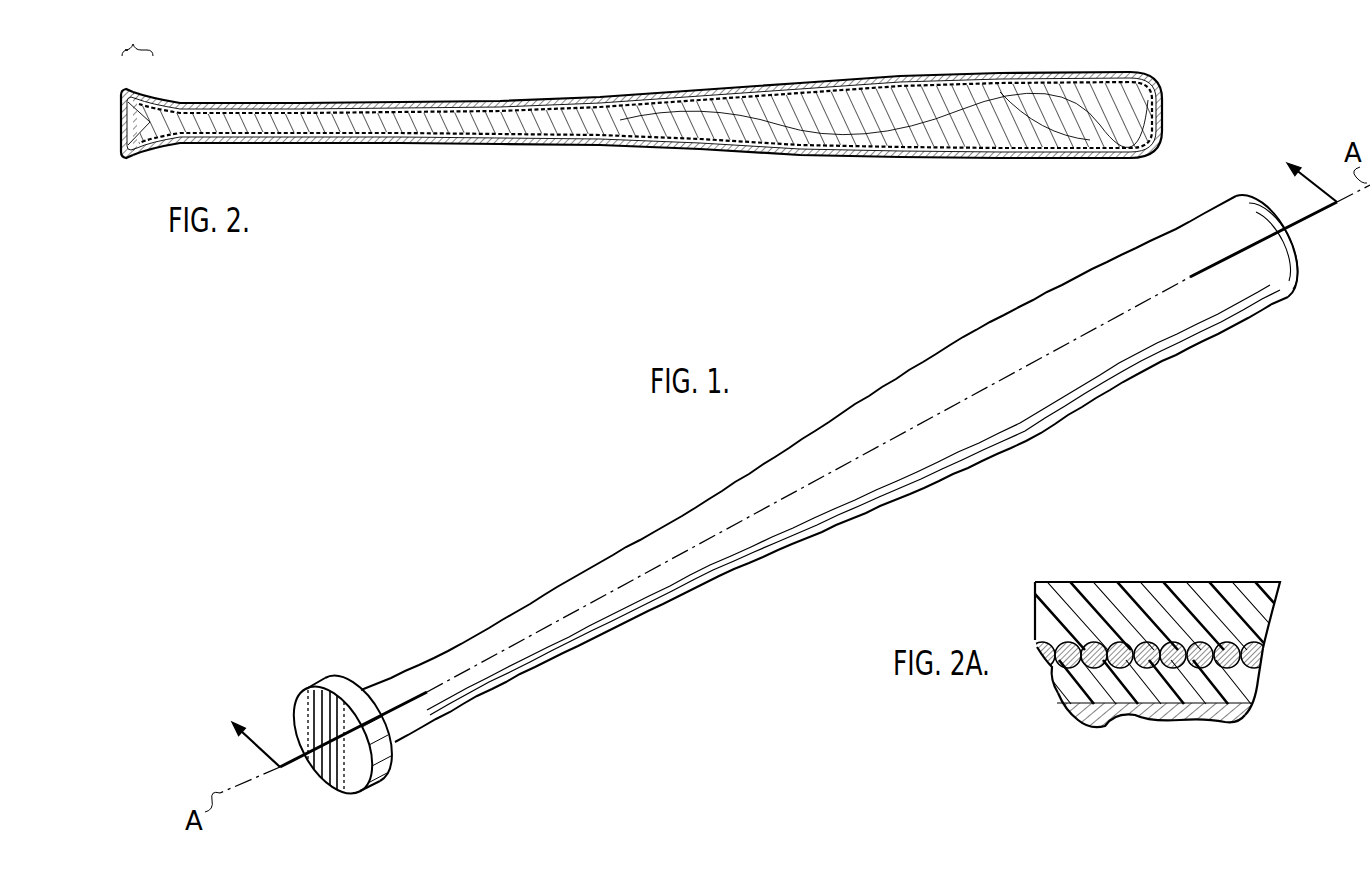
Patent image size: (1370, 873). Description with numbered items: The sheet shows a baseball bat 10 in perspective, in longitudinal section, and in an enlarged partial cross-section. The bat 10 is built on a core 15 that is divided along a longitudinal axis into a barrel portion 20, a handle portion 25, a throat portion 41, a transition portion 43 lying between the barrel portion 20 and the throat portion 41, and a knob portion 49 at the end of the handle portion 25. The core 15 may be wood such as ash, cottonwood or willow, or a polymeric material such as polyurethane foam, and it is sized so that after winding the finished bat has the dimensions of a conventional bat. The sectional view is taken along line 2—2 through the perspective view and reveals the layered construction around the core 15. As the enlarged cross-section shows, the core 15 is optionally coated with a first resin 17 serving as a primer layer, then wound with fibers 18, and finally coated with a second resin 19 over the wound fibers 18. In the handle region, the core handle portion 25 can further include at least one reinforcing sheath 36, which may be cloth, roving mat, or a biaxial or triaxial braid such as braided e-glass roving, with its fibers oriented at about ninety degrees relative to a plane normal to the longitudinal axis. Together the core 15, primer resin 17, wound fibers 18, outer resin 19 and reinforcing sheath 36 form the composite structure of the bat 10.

In FIG. 1, the baseball bat 10 is at (877, 512).
In FIG. 2, the core 15 is at (1033, 150).
In FIG. 2A, the core 15 is at (1240, 720).
In FIG. 2A, the first resin 17 is at (1262, 683).
In FIG. 2A, the fibers 18 is at (1265, 648).
In FIG. 2A, the second resin 19 is at (1280, 586).
In FIG. 2, the barrel portion 20 is at (1160, 56).
In FIG. 1, the barrel portion 20 is at (1236, 177).
In FIG. 2, the handle portion 25 is at (622, 56).
In FIG. 1, the handle portion 25 is at (743, 439).
In FIG. 2, the reinforcing sheath 36 is at (633, 140).
In FIG. 2, the throat portion 41 is at (753, 56).
In FIG. 1, the throat portion 41 is at (846, 386).
In FIG. 2, the transition portion 43 is at (867, 56).
In FIG. 1, the transition portion 43 is at (956, 328).
In FIG. 1, the knob portion 49 is at (330, 665).
In FIG. 1, the line 2— 2 is at (795, 483).